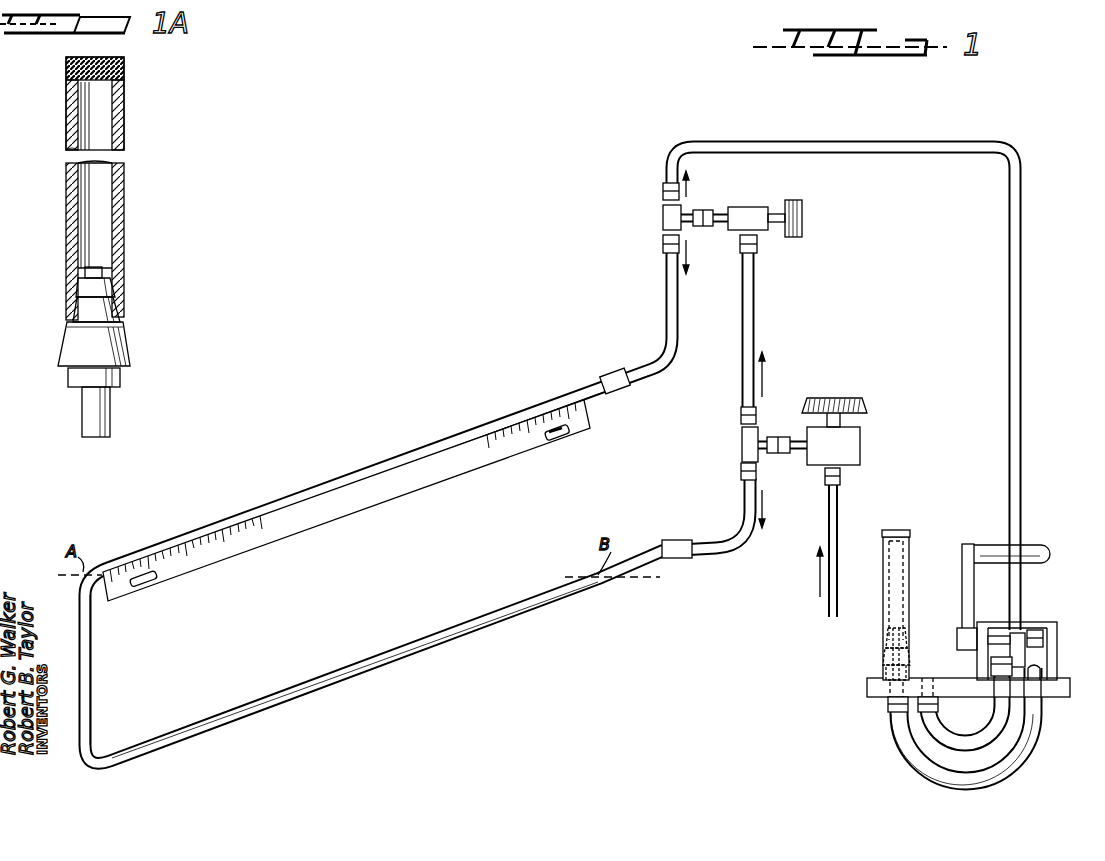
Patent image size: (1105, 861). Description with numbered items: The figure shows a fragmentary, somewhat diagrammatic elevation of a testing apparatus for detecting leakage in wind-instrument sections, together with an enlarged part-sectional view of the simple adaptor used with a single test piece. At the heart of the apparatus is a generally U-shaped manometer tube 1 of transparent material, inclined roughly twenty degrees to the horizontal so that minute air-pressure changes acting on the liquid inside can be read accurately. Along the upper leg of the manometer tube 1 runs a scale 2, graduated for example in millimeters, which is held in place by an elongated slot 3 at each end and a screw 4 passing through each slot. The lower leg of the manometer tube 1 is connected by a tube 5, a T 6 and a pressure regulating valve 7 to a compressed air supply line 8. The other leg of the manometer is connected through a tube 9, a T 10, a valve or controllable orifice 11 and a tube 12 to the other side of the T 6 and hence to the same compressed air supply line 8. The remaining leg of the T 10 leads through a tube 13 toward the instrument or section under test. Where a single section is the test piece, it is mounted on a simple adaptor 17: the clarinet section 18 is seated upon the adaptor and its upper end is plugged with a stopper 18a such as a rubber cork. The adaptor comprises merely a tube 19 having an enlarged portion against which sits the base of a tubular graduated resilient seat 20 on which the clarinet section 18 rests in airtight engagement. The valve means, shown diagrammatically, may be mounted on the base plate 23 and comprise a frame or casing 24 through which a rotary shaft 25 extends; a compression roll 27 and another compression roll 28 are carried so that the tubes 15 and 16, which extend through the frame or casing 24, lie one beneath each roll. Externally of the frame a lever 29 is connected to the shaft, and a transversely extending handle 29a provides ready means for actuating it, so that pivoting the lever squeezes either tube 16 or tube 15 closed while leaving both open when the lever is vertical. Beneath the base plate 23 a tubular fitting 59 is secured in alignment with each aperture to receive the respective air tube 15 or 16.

In FIG. 1, the manometer tube 1 is at (352, 473).
In FIG. 1, the scale 2 is at (322, 514).
In FIG. 1, the elongated slot 3 is at (554, 437).
In FIG. 1, the screw 4 is at (562, 432).
In FIG. 1, the tube 5 is at (722, 543).
In FIG. 1, the T 6 is at (742, 445).
In FIG. 1, the pressure regulating valve 7 is at (846, 449).
In FIG. 1, the compressed air supply line 8 is at (830, 599).
In FIG. 1, the tube 9 is at (679, 318).
In FIG. 1, the T 10 is at (666, 218).
In FIG. 1, the valve or controllable orifice 11 is at (745, 210).
In FIG. 1, the tube 12 is at (757, 320).
In FIG. 1, the tube 13 is at (874, 150).
In FIG. 1, the tube 15 is at (968, 749).
In FIG. 1, the tube 16 is at (910, 758).
In FIG. 1A, the adaptor 17 is at (142, 326).
In FIG. 1, the adaptor 17 is at (878, 661).
In FIG. 1A, the clarinet section 18 is at (131, 181).
In FIG. 1, the clarinet section 18 is at (910, 583).
In FIG. 1A, the stopper 18a is at (124, 62).
In FIG. 1, the stopper 18a is at (895, 530).
In FIG. 1A, the tube 19 is at (100, 428).
In FIG. 1A, the tubular graduated resilient seat 20 is at (113, 345).
In FIG. 1, the base plate 23 is at (866, 690).
In FIG. 1, the frame or casing 24 is at (1055, 648).
In FIG. 1, the rotary shaft 25 is at (999, 633).
In FIG. 1, the compression roll 27 is at (1036, 632).
In FIG. 1, the compression roll 28 is at (1005, 660).
In FIG. 1, the lever 29 is at (963, 614).
In FIG. 1, the handle 29a is at (1000, 553).
In FIG. 1, the tubular fitting 59 is at (888, 708).